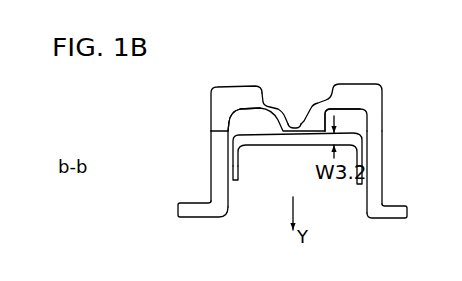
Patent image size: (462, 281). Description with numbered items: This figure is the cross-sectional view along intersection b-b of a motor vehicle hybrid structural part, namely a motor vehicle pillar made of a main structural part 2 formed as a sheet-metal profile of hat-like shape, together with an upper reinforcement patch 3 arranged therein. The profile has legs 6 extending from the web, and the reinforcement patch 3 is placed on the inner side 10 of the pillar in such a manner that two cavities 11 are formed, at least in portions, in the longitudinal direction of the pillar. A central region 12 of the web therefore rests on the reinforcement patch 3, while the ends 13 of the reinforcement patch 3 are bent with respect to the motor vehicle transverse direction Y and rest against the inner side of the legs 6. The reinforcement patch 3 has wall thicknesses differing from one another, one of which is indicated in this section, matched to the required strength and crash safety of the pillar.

The main structural part 2 is at (228, 86).
The reinforcement patch 3 is at (258, 146).
The legs 6 is at (216, 165).
The inner side 10 is at (211, 130).
The cavities 11 is at (252, 125).
The central region 12 is at (299, 127).
The ends 13 is at (236, 180).